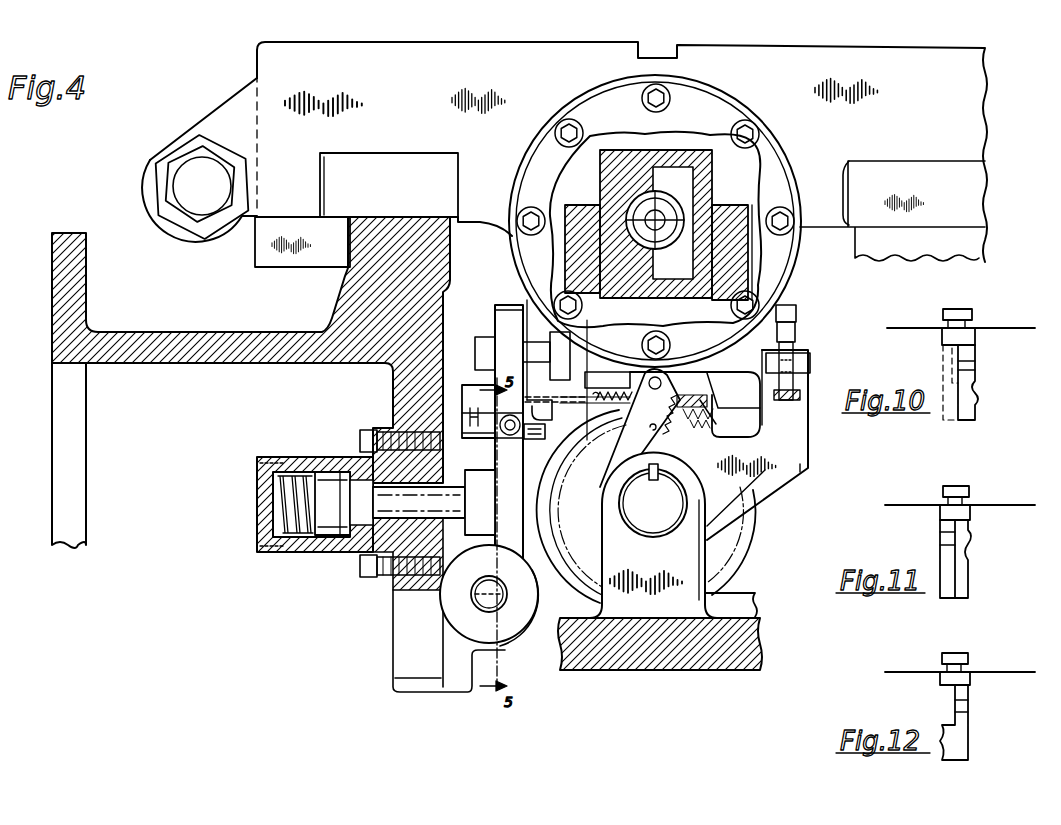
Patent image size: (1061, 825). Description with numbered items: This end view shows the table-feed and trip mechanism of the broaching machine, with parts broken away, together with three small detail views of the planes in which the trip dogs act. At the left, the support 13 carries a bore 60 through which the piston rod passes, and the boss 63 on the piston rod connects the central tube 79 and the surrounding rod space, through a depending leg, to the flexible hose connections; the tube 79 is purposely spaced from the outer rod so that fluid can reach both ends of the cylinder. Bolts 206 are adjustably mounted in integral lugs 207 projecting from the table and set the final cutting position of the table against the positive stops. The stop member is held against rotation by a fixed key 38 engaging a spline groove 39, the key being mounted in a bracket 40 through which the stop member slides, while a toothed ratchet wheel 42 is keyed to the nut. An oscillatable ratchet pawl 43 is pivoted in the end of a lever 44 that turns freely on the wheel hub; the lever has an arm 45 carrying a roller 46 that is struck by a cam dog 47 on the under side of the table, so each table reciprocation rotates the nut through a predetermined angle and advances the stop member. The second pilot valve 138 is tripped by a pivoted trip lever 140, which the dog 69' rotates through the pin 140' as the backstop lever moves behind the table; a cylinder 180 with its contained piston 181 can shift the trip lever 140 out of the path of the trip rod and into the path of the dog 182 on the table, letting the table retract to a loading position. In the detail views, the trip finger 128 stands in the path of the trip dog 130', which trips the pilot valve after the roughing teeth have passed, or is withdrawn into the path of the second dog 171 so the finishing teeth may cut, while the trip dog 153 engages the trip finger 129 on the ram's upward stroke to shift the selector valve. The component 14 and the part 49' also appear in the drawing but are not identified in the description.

In FIG. 4, the housing 14 is at (512, 43).
In FIG. 4, the lug 207 is at (221, 107).
In FIG. 4, the bolt 206 is at (178, 174).
In FIG. 4, the support 13 is at (60, 237).
In FIG. 4, the boss 63 is at (688, 152).
In FIG. 4, the tube 79 is at (640, 198).
In FIG. 4, the bore 60 is at (735, 268).
In FIG. 4, the dog 182 is at (470, 388).
In FIG. 4, the cam dog 47 is at (801, 336).
In FIG. 4, the roller 46 is at (800, 350).
In FIG. 4, the ratchet pawl 43 is at (707, 385).
In FIG. 4, the plate 49' is at (593, 380).
In FIG. 4, the dog 69' is at (556, 412).
In FIG. 4, the lever 44 is at (635, 425).
In FIG. 4, the pin 140' is at (503, 445).
In FIG. 4, the cylinder 180 is at (300, 457).
In FIG. 4, the piston 181 is at (325, 482).
In FIG. 4, the arm 45 is at (800, 441).
In FIG. 4, the fixed key 38 is at (660, 470).
In FIG. 4, the bracket 40 is at (697, 495).
In FIG. 4, the toothed ratchet wheel 42 is at (748, 525).
In FIG. 4, the spline groove 39 is at (663, 522).
In FIG. 4, the trip lever 140 is at (531, 455).
In FIG. 4, the second pilot valve 138 is at (500, 636).
In FIG. 10, the second dog 171 is at (968, 337).
In FIG. 10, the trip finger 128 is at (965, 370).
In FIG. 11, the trip finger 128 is at (950, 556).
In FIG. 11, the trip dog 130' is at (980, 509).
In FIG. 12, the trip dog 153 is at (968, 680).
In FIG. 12, the trip finger 129 is at (962, 712).